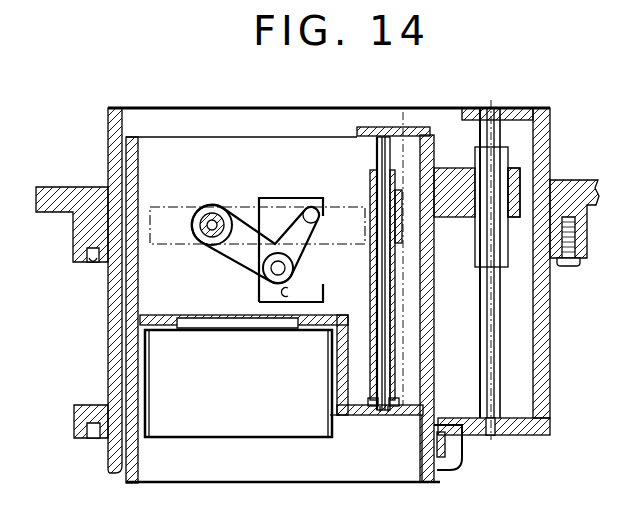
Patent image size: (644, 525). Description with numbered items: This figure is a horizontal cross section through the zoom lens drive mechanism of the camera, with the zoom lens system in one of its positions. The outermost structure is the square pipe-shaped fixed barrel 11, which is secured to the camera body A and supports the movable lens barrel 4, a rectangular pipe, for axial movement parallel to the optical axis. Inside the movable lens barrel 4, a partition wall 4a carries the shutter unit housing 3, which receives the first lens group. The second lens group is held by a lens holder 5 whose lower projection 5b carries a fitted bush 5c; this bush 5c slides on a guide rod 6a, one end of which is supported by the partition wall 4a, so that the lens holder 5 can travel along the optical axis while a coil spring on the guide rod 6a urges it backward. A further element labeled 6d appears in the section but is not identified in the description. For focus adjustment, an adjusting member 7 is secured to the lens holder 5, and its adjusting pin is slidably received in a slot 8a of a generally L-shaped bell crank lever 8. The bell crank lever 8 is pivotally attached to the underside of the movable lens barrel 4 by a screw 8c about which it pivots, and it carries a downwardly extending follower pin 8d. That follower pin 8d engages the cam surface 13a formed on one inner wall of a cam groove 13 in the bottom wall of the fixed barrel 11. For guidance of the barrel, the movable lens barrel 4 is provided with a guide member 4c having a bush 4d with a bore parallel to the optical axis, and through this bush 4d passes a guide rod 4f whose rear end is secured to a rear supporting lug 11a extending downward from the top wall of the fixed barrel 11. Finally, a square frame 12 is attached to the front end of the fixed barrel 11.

The camera body A is at (60, 187).
The shutter unit housing 3 is at (268, 425).
The movable lens barrel 4 is at (135, 462).
The partition wall 4a is at (162, 315).
The guide member 4c is at (520, 178).
The bush 4d is at (508, 148).
The guide rod 4f is at (500, 385).
The lens holder 5 is at (159, 207).
The lower projection 5b is at (403, 190).
The bush 5c is at (372, 182).
The guide rod 6a is at (377, 153).
The lower valve element 6d is at (398, 415).
The adjusting member 7 is at (211, 222).
The bell crank lever 8 is at (241, 265).
The slot 8a is at (222, 215).
The screw 8c is at (293, 268).
The follower pin 8d is at (304, 210).
The fixed barrel 11 is at (115, 298).
The rear supporting lug 11a is at (490, 108).
The square frame 12 is at (470, 435).
The cam groove 13 is at (258, 292).
The cam surface 13a is at (290, 292).